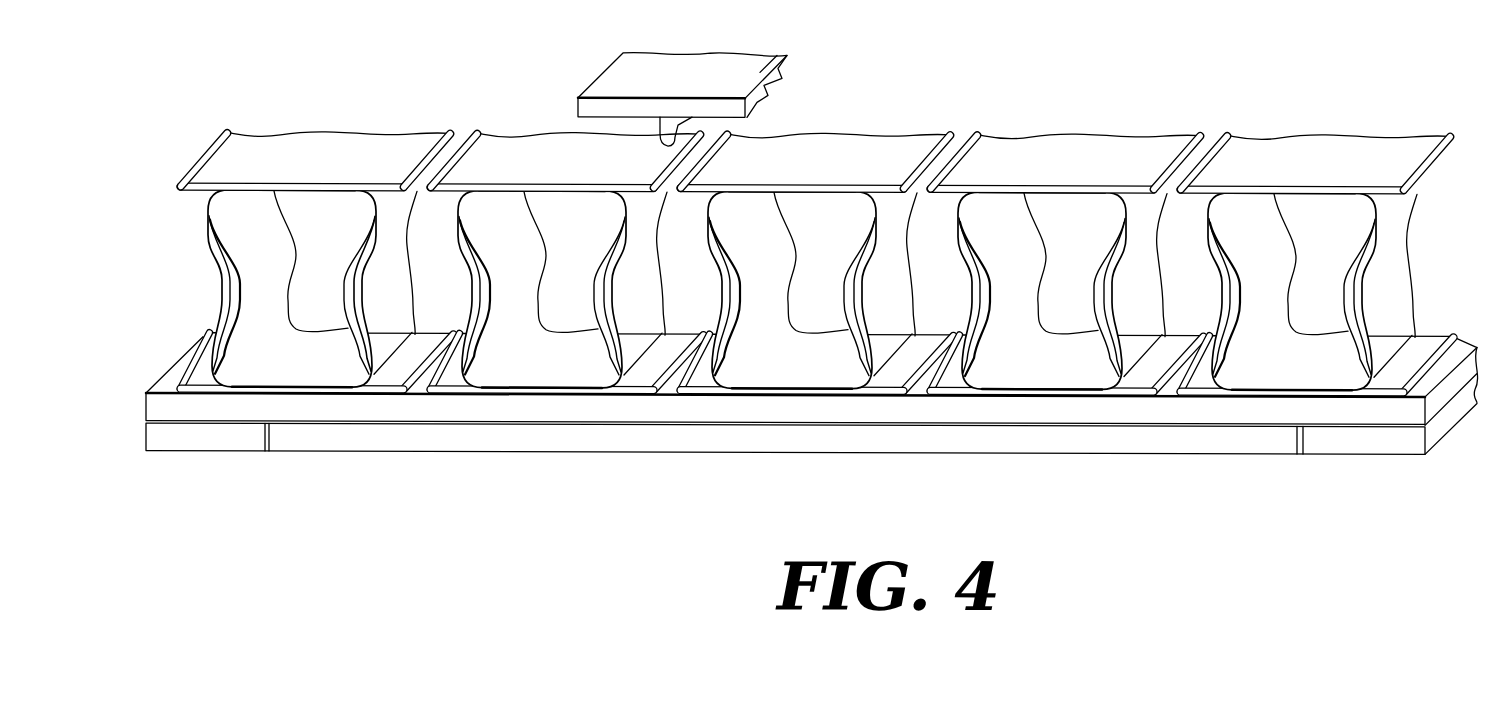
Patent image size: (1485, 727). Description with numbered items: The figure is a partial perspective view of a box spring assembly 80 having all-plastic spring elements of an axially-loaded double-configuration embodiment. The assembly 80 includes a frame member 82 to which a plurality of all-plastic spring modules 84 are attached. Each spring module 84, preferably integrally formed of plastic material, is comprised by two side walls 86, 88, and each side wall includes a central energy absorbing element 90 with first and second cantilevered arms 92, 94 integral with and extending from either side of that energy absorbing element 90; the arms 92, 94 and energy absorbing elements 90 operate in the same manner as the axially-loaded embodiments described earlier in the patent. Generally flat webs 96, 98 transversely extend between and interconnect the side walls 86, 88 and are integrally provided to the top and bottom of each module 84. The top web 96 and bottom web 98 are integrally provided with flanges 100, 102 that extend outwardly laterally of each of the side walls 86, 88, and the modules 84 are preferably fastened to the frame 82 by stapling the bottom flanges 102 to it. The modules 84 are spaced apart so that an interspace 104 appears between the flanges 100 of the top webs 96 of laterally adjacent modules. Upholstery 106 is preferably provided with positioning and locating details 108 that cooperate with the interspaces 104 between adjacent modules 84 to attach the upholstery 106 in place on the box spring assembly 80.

The box spring assembly 80 is at (804, 306).
The frame member 82 is at (345, 438).
The spring module 84 is at (271, 288).
The side wall 86 is at (242, 295).
The side wall 88 is at (337, 295).
The energy absorbing element 90 is at (302, 261).
The first cantilevered arm 92 is at (292, 206).
The second cantilevered arm 94 is at (292, 365).
The top web 96 is at (292, 168).
The bottom web 98 is at (252, 394).
The flange 100 is at (302, 167).
The flange 102 is at (205, 380).
The interspace 104 is at (923, 201).
The upholstery 106 is at (710, 113).
The positioning and locating detail 108 is at (662, 138).